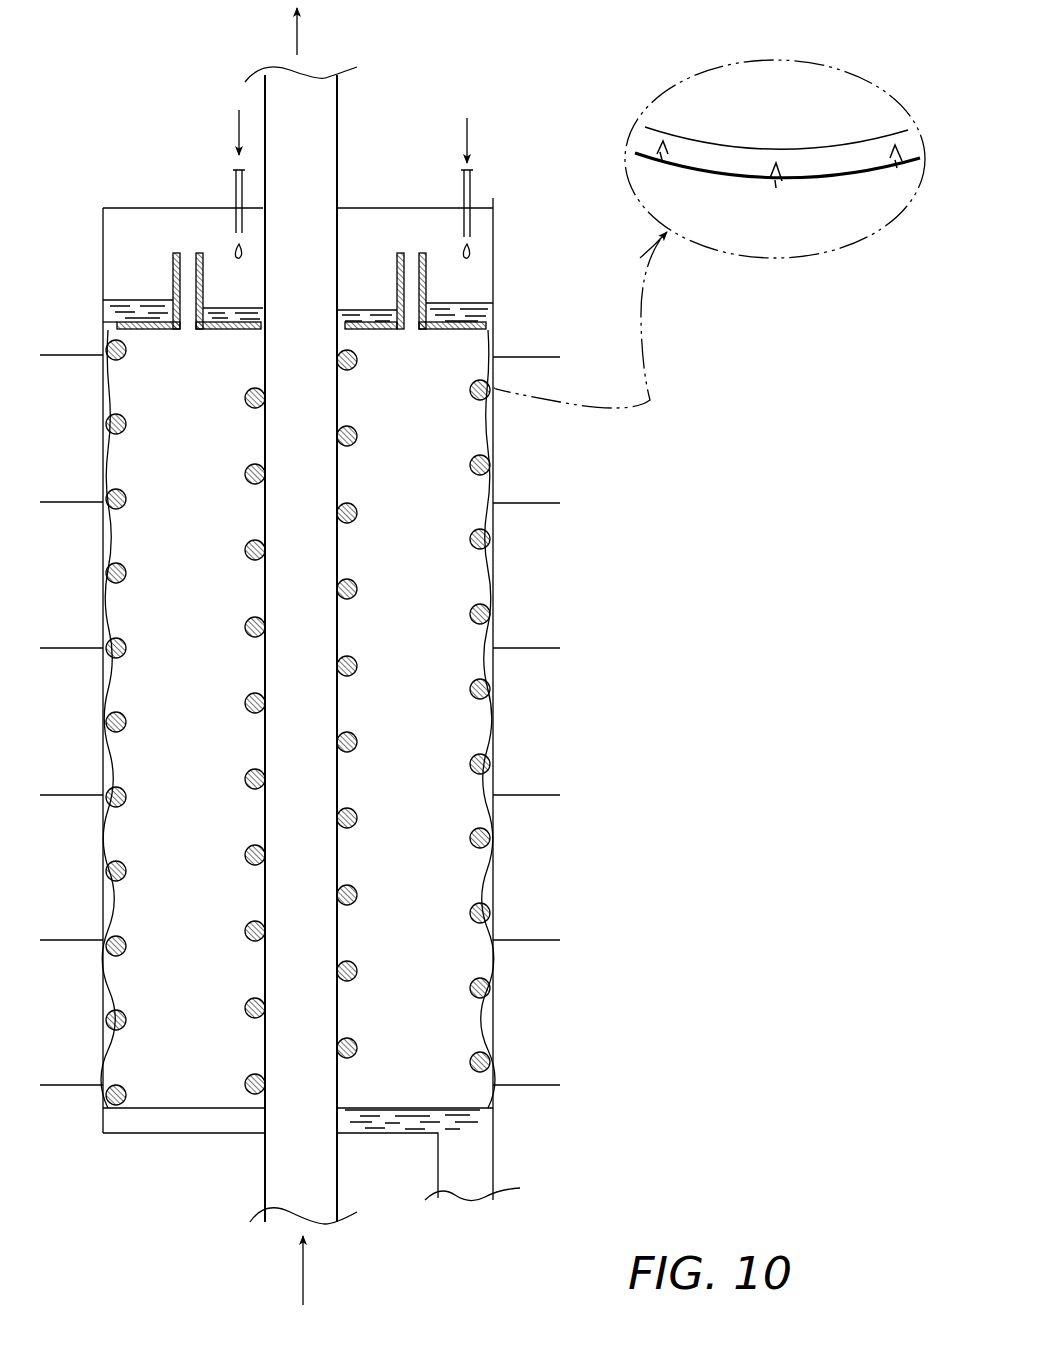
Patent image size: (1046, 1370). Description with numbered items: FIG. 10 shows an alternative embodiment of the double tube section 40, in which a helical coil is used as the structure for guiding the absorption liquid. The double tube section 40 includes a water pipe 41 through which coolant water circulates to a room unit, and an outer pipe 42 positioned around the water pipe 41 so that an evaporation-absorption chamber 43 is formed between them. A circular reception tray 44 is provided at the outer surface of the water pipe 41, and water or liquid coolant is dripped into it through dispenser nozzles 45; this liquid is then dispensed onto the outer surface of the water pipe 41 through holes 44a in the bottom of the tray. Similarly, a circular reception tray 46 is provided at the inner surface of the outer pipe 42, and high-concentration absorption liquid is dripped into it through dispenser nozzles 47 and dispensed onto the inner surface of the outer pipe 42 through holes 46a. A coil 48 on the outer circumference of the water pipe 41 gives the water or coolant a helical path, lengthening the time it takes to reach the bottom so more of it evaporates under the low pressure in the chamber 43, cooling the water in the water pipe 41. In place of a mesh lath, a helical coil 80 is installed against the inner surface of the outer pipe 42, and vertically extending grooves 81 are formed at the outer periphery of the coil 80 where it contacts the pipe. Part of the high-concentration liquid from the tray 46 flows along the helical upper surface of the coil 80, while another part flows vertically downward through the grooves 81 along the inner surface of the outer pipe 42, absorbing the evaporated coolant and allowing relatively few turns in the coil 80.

The double tube section 40 is at (482, 656).
The water pipe 41 is at (265, 1168).
The outer pipe 42 is at (493, 708).
The evaporation-absorption chamber 43 is at (460, 1023).
The circular reception tray 44 is at (205, 265).
The holes 44a is at (262, 327).
The dispenser nozzles 45 is at (237, 220).
The circular reception tray 46 is at (432, 265).
The holes 46a is at (487, 332).
The dispenser nozzles 47 is at (473, 220).
The coil 48 is at (357, 588).
The helical coil 80 is at (125, 573).
The vertically extending grooves 81 is at (776, 183).